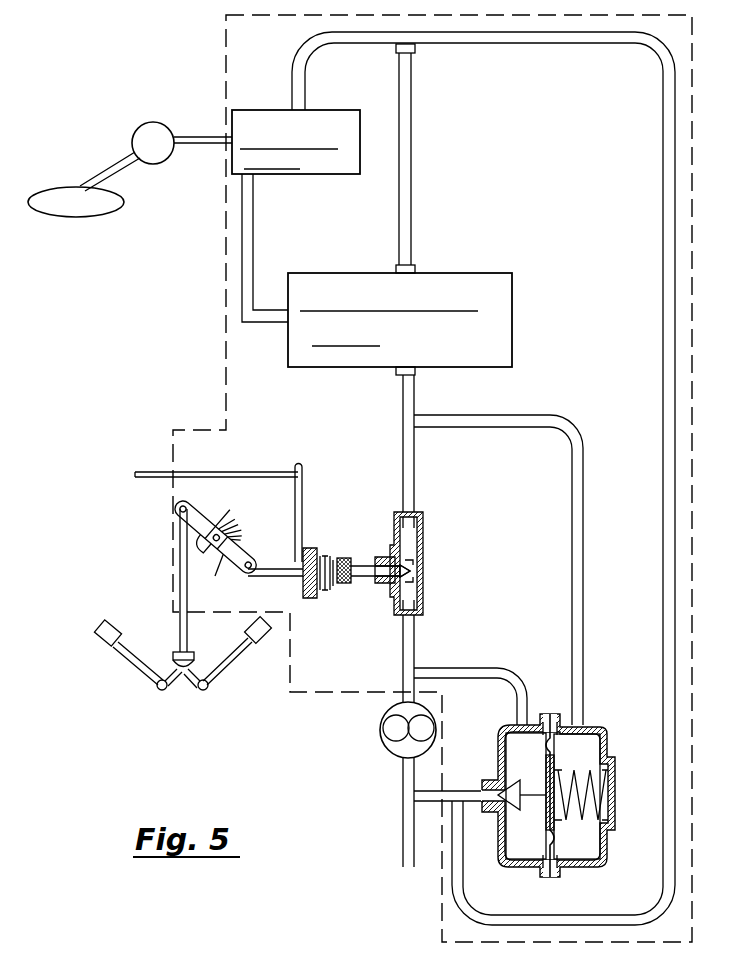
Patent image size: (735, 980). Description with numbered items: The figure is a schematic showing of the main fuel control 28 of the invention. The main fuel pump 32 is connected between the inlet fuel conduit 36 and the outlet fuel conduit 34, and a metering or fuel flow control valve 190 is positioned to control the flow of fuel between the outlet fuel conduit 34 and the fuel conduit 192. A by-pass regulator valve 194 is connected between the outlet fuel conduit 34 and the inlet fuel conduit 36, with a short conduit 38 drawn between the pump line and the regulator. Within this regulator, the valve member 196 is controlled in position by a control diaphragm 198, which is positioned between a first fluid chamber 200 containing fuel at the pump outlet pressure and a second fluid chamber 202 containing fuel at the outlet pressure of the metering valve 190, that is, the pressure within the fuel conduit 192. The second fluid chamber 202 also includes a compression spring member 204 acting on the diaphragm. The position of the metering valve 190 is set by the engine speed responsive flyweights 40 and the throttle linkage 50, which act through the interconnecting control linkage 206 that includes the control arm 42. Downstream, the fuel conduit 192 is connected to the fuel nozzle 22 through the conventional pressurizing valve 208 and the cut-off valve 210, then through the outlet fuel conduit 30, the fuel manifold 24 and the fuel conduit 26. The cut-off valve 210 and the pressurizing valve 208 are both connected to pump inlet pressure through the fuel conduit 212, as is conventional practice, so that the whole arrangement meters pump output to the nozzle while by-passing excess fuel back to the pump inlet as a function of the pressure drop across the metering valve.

The fuel nozzle 22 is at (90, 212).
The fuel manifold 24 is at (145, 130).
The fuel conduit 26 is at (103, 172).
The main fuel control 28 is at (222, 291).
The outlet fuel conduit 30 is at (195, 139).
The main fuel pump 32 is at (392, 745).
The outlet fuel conduit 34 is at (403, 627).
The inlet fuel conduit 36 is at (403, 860).
The conduit 38 is at (430, 800).
The engine speed responsive flyweights 40 is at (102, 630).
The control arm 42 is at (182, 582).
The throttle linkage 50 is at (152, 470).
The metering or fuel flow control valve 190 is at (362, 572).
The fuel conduit 192 is at (402, 433).
The by-pass regulator valve 194 is at (503, 723).
The valve member 196 is at (500, 806).
The control diaphragm 198 is at (548, 717).
The first fluid chamber 200 is at (518, 842).
The second fluid chamber 202 is at (580, 848).
The compression spring member 204 is at (592, 752).
The interconnecting control linkage 206 is at (250, 553).
The pressurizing valve 208 is at (505, 328).
The cut-off valve 210 is at (337, 167).
The fuel conduit 212 is at (669, 190).